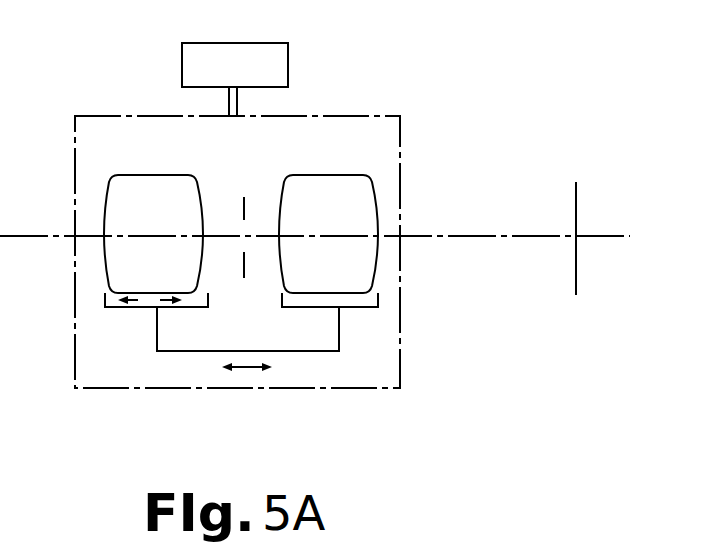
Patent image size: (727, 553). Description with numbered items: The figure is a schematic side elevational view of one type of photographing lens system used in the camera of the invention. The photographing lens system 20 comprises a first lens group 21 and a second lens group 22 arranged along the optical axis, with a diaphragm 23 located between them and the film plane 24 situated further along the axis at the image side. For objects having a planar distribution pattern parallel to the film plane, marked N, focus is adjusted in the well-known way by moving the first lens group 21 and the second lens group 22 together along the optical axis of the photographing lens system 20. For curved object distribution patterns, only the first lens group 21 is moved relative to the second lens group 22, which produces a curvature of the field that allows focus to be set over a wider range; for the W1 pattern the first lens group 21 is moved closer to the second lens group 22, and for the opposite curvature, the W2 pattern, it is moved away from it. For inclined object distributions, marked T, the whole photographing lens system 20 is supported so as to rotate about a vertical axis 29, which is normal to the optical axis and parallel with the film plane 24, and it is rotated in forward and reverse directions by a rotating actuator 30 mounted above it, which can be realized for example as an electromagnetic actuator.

The rotating actuator 30 is at (282, 60).
The vertical axis 29 is at (240, 114).
The tilt distribution pattern T is at (231, 115).
The photographing lens system 20 is at (288, 162).
The first lens group 21 is at (188, 210).
The second lens group 22 is at (295, 210).
The diaphragm 23 is at (247, 265).
The film plane 24 is at (576, 212).
The W1 distribution pattern W1 is at (168, 307).
The W2 distribution pattern W2 is at (135, 307).
The normal distribution pattern N is at (247, 367).